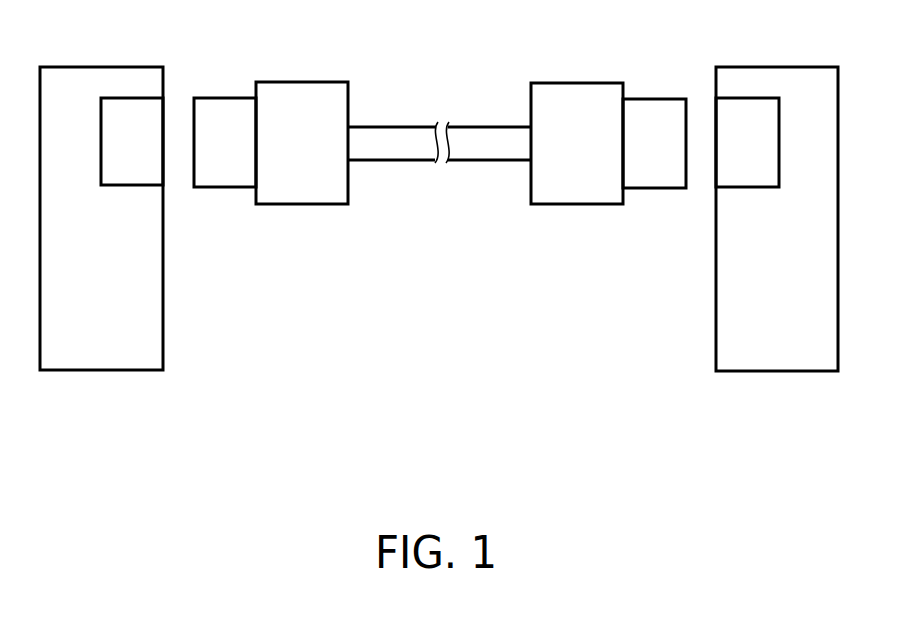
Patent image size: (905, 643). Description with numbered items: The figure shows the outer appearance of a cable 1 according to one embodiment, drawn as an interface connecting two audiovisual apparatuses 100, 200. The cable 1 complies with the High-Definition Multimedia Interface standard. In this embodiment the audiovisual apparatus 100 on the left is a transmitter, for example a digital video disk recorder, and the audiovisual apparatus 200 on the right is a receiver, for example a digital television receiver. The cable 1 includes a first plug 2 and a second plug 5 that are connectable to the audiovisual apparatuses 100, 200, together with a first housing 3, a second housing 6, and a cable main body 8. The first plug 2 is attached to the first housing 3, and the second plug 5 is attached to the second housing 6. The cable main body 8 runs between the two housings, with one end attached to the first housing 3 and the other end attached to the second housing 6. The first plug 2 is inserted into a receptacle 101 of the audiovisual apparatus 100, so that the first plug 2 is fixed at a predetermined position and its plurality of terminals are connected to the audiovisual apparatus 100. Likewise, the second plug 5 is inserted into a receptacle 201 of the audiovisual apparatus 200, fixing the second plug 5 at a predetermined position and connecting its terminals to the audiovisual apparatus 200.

The cable 1 is at (478, 85).
The first plug 2 is at (217, 187).
The first housing 3 is at (297, 204).
The second plug 5 is at (661, 188).
The second housing 6 is at (580, 204).
The cable main body 8 is at (402, 160).
The audiovisual apparatus 100 is at (92, 371).
The receptacle 101 is at (135, 97).
The audiovisual apparatus 200 is at (790, 371).
The receptacle 201 is at (742, 97).